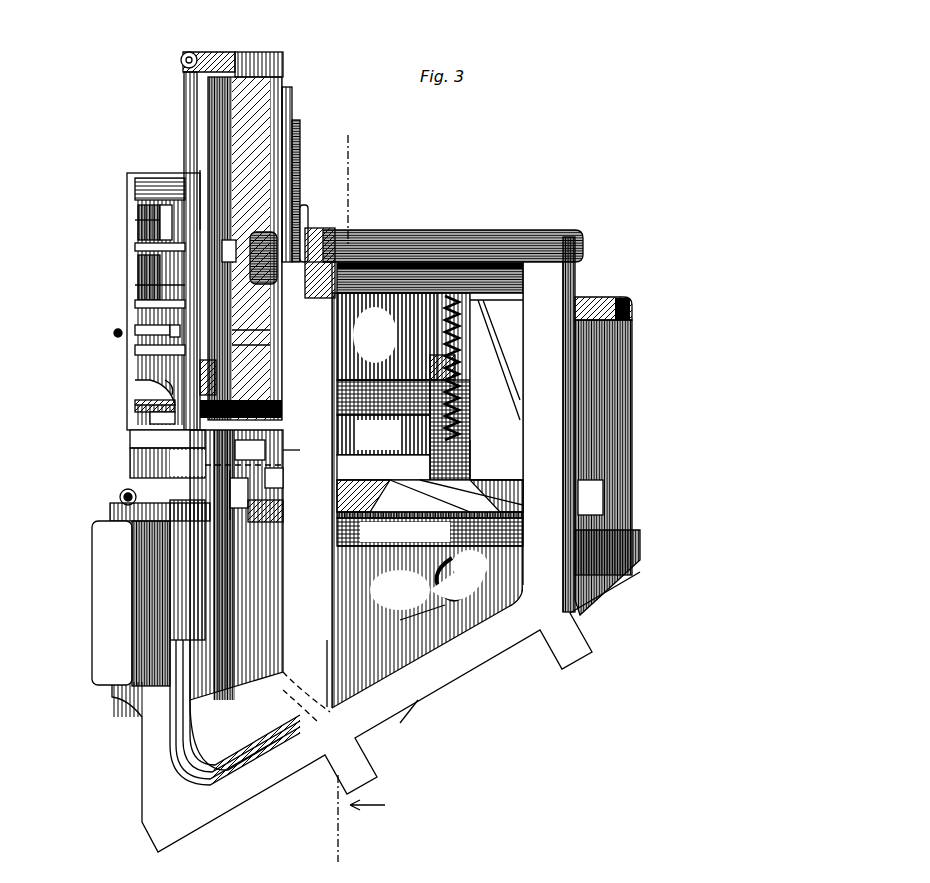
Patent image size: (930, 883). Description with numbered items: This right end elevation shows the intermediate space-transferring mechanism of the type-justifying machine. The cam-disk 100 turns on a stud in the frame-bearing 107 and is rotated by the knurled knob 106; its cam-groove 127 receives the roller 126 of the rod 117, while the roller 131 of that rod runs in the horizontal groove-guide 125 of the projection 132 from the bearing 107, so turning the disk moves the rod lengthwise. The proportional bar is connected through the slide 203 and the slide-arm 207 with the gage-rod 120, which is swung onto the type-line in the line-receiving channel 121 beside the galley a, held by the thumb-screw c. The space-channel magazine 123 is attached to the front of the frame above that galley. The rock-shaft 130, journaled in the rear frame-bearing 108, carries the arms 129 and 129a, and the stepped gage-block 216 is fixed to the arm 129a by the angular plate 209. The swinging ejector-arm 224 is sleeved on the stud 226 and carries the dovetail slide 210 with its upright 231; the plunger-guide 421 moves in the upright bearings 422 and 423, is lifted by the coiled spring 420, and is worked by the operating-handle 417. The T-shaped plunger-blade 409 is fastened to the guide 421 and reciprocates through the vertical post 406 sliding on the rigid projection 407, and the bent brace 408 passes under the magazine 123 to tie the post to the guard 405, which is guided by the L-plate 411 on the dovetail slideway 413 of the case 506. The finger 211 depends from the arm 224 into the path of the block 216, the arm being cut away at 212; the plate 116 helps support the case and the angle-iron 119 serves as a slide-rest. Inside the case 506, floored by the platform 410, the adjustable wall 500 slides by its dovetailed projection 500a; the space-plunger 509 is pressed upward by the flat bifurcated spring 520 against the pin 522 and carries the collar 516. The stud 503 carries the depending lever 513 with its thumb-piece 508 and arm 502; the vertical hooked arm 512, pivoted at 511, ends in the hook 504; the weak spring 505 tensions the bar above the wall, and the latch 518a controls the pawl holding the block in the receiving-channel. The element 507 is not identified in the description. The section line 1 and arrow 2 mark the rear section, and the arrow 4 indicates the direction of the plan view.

The slide-arm 207 is at (248, 58).
The gage-rod 120 is at (184, 86).
The slide 203 is at (285, 63).
The space-channel magazine 123 is at (282, 80).
The cam-groove 127 is at (300, 143).
The cam-disk 100 is at (292, 160).
The rod 117 is at (305, 210).
The section line 1 is at (343, 500).
The horizontal groove-guide 125 is at (345, 236).
The roller 131 is at (340, 246).
The frame-bearing 107 is at (458, 232).
The weak spring 505 is at (160, 184).
The thumb-screw c is at (200, 188).
The pawl 507 is at (228, 240).
The dovetailed projection 500a is at (138, 215).
The arm 502 is at (135, 222).
The hook 504 is at (140, 232).
The case 506 is at (132, 248).
The stud 503 is at (136, 268).
The adjustable wall 500 is at (135, 286).
The pivot 511 is at (135, 300).
The latch 518a is at (115, 333).
The thumb-piece 508 is at (165, 330).
The depending lever 513 is at (170, 335).
The vertical hooked arm 512 is at (135, 356).
The pin 522 is at (168, 386).
The collar 516 is at (150, 396).
The space-plunger 509 is at (165, 406).
The flat bifurcated spring 520 is at (170, 421).
The platform 410 is at (132, 438).
The dovetail slideway 413 is at (176, 447).
The line-receiving channel 121 is at (200, 467).
The plate 116 is at (120, 498).
The angle-iron 119 is at (125, 512).
The galley a is at (92, 591).
The knurled knob 106 is at (263, 286).
The L-plate 411 is at (230, 348).
The guard 405 is at (216, 376).
The roller 126 is at (387, 335).
The projection 132 is at (387, 344).
The upright bearing 423 is at (468, 340).
The T-shaped plunger-blade 409 is at (428, 400).
The plunger-guide 421 is at (430, 436).
The dovetail slide 210 is at (385, 450).
The upright bearing 422 is at (430, 470).
The coiled spring 420 is at (465, 438).
The upright 231 is at (486, 460).
The bent bar or brace 408 is at (243, 446).
The vertical post 406 is at (285, 456).
The rigid projection 407 is at (283, 473).
The finger 211 is at (285, 487).
The angular plate 209 is at (284, 506).
The cut-away portion 212 is at (430, 496).
The swinging ejector-arm 224 is at (480, 490).
The arm 129 is at (470, 536).
The stepped gage-block 216 is at (262, 546).
The arm 129a is at (355, 550).
The rock-shaft 130 is at (470, 556).
The frame-bearing 108 is at (520, 593).
The operating-handle 417 is at (418, 592).
The stud 226 is at (605, 300).
The indicating-arrow 4 is at (416, 717).
The indicating-arrow 2 is at (375, 805).